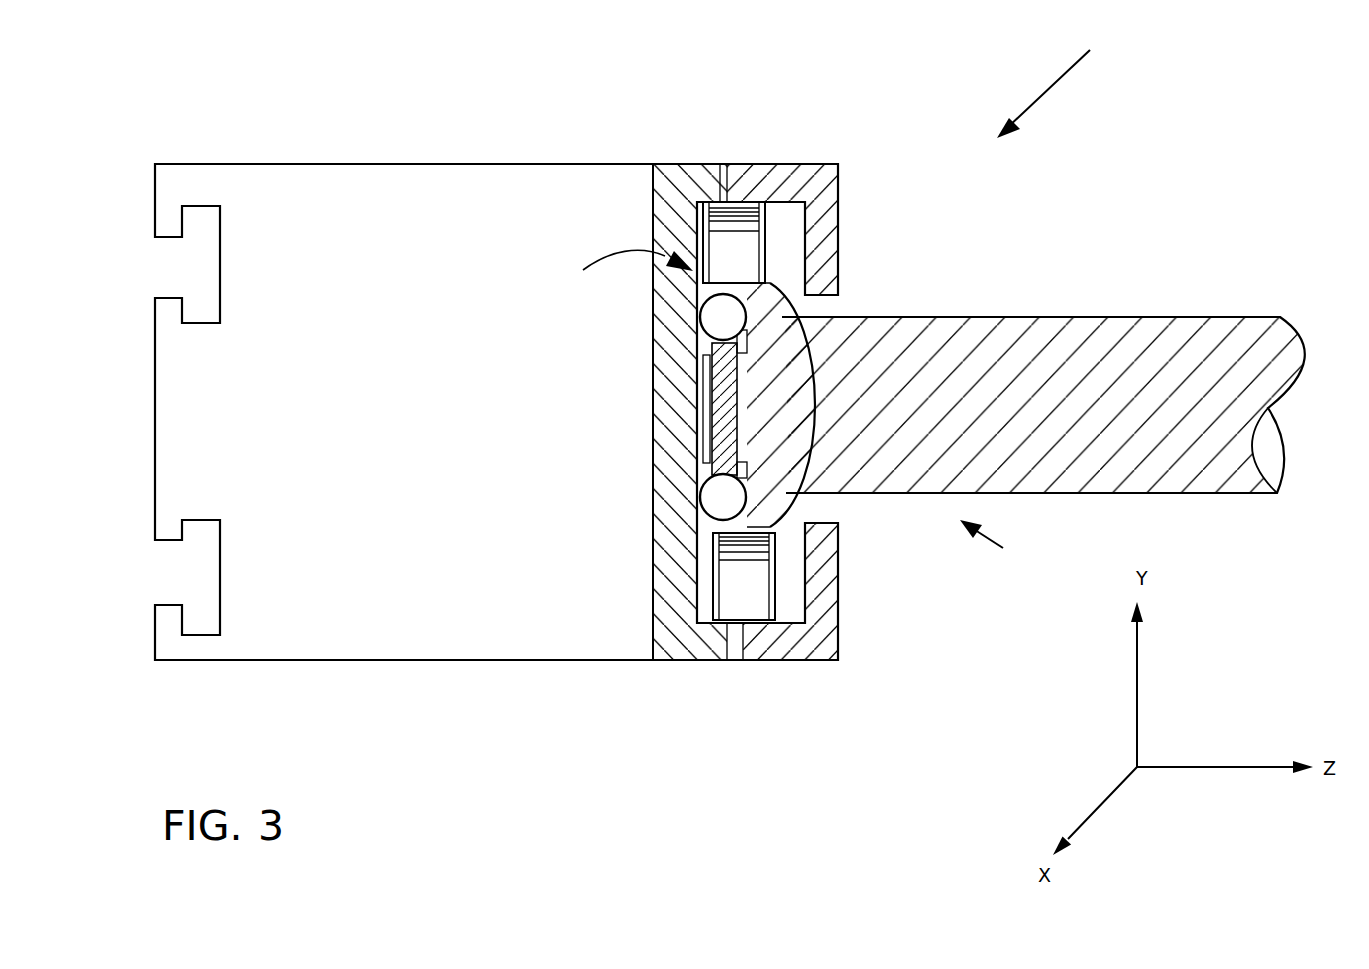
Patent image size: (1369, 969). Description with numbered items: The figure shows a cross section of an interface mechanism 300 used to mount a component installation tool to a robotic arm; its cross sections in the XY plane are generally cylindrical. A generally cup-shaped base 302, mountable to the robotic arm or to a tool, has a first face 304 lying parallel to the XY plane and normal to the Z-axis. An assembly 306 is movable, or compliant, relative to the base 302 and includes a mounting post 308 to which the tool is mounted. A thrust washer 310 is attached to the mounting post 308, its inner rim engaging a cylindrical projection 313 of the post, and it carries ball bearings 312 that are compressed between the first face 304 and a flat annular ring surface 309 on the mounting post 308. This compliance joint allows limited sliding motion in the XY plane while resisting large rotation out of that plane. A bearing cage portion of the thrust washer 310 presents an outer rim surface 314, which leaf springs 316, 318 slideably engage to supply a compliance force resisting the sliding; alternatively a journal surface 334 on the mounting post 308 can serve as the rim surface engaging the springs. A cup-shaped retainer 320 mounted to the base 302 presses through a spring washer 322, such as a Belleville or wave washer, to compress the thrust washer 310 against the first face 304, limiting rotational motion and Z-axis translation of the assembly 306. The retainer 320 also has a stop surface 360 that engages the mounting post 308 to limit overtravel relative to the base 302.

The interface mechanism 300 is at (1069, 83).
The base 302 is at (690, 163).
The first face 304 is at (616, 266).
The assembly 306 is at (1000, 542).
The mounting post 308 is at (1088, 423).
The flat annular ring surface 309 is at (791, 403).
The thrust washer 310 is at (712, 412).
The ball bearings 312 is at (700, 475).
The cylindrical projection 313 is at (702, 372).
The outer rim surface 314 is at (685, 310).
The leaf spring 316 is at (742, 240).
The leaf spring 318 is at (747, 600).
The retainer 320 is at (776, 163).
The spring washer 322 is at (775, 273).
The journal surface 334 is at (894, 373).
The stop surface 360 is at (773, 278).